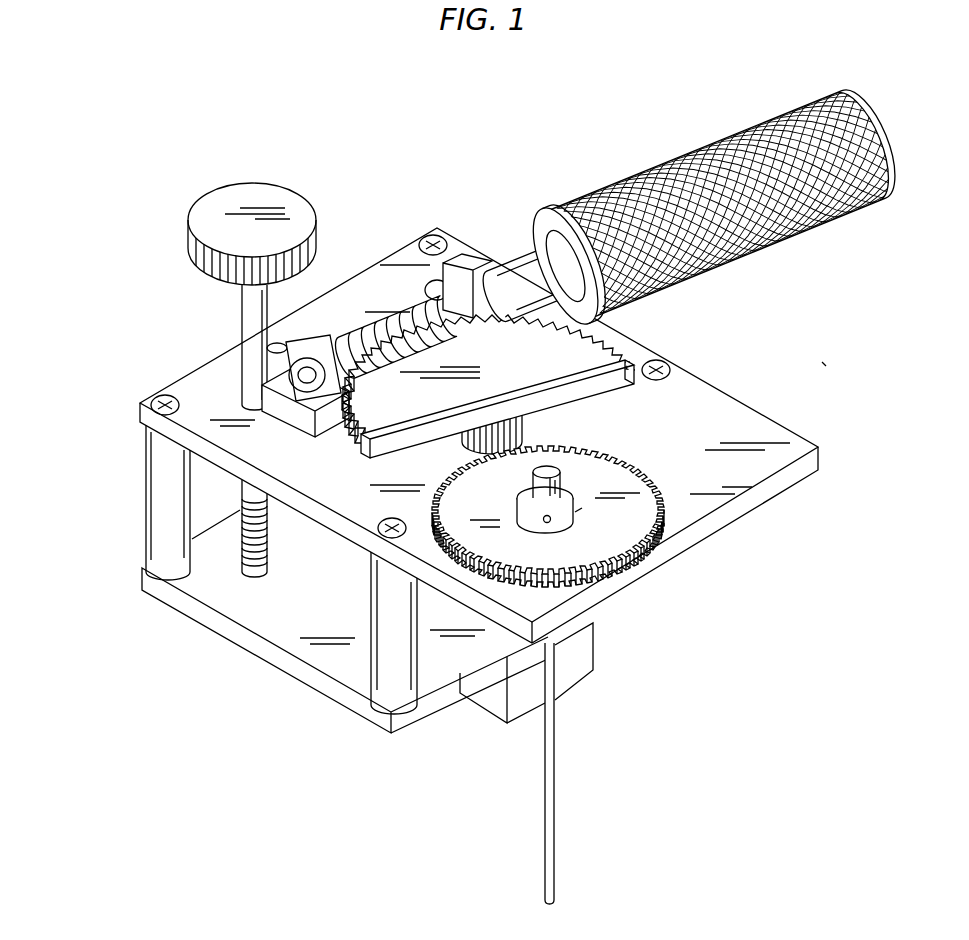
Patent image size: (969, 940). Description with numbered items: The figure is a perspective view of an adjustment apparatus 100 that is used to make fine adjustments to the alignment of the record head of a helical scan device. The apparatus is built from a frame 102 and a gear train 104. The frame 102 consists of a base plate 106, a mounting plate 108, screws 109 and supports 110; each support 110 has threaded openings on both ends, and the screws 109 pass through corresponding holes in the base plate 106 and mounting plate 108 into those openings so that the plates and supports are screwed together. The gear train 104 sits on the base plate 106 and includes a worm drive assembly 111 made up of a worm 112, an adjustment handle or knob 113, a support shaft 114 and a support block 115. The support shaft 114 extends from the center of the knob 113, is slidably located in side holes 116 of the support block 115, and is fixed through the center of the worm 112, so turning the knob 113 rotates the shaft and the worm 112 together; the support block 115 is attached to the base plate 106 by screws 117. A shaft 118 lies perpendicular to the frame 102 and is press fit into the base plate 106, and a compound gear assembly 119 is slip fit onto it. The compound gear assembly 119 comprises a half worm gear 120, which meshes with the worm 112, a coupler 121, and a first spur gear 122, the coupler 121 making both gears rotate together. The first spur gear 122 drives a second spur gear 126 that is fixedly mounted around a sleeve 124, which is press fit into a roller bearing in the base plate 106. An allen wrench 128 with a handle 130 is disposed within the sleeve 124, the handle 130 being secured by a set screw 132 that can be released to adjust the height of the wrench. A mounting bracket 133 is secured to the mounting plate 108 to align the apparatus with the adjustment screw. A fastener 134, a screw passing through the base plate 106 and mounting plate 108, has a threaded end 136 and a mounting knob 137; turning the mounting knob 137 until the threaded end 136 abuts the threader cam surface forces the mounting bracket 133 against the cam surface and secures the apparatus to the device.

The adjustment apparatus 100 is at (182, 151).
The frame 102 is at (84, 403).
The gear train 104 is at (885, 465).
The base plate 106 is at (143, 418).
The mounting plate 108 is at (143, 577).
The screws 109 is at (157, 398).
The supports 110 is at (148, 507).
The worm drive assembly 111 is at (320, 168).
The worm 112 is at (400, 302).
The adjustment handle or knob 113 is at (677, 163).
The support shaft 114 is at (293, 387).
The support block 115 is at (380, 302).
The side holes 116 is at (490, 262).
The screws 117 is at (318, 333).
The shaft 118 is at (612, 333).
The compound gear assembly 119 is at (822, 362).
The half worm gear 120 is at (525, 430).
The coupler 121 is at (561, 468).
The first spur gear 122 is at (602, 436).
The sleeve 124 is at (633, 553).
The second spur gear 126 is at (585, 505).
The allen wrench 128 is at (556, 766).
The handle 130 is at (580, 505).
The set screw 132 is at (551, 521).
The mounting bracket 133 is at (585, 648).
The fastener 134 is at (240, 320).
The threaded end 136 is at (272, 541).
The mounting knob 137 is at (190, 228).